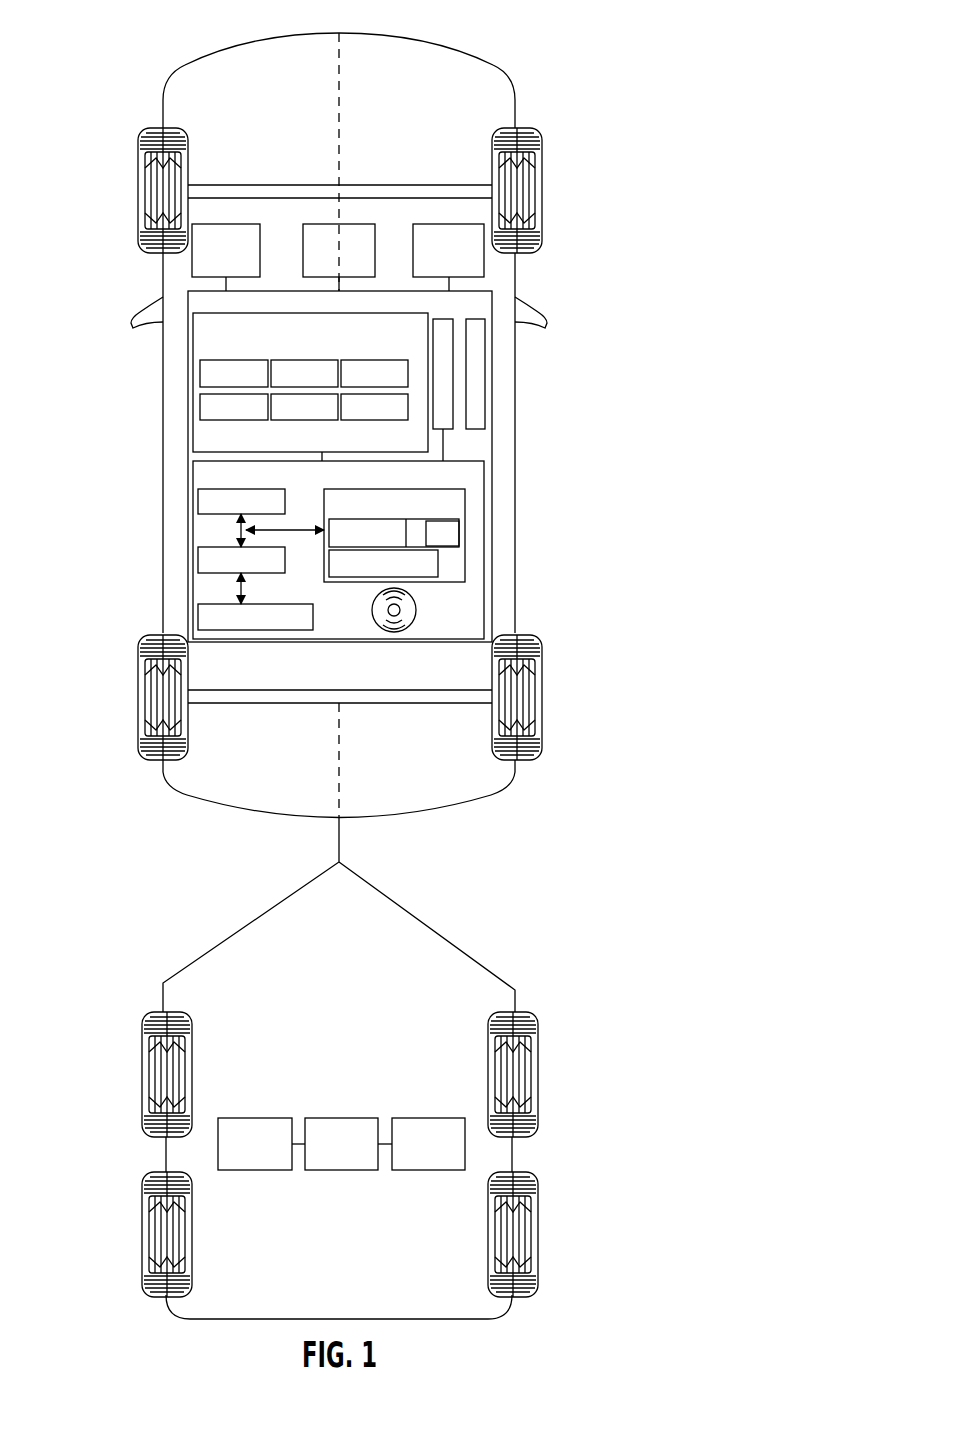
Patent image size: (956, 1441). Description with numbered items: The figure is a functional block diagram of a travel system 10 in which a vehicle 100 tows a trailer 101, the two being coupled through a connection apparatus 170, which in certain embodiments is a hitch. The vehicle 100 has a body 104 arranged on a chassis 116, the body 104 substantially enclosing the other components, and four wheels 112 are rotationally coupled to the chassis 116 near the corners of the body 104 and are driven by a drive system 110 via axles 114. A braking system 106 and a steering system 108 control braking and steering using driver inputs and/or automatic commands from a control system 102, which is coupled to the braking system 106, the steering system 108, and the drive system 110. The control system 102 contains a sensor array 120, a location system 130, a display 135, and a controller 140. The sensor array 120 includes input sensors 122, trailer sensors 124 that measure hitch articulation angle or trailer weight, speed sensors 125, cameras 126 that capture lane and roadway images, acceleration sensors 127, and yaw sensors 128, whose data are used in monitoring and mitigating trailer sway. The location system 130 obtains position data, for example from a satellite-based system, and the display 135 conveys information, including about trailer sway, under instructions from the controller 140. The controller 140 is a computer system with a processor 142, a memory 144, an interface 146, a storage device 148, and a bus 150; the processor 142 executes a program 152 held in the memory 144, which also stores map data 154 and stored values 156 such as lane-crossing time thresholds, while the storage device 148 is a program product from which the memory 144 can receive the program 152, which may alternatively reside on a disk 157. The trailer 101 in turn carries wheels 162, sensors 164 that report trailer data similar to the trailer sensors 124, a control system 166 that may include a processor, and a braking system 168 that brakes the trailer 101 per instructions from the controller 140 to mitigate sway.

The travel system 10 is at (95, 70).
The vehicle 100 is at (512, 20).
The trailer 101 is at (443, 924).
The control system 102 is at (492, 300).
The body 104 is at (165, 360).
The braking system 106 is at (250, 224).
The steering system 108 is at (328, 224).
The drive system 110 is at (425, 224).
The wheels 112 is at (138, 178).
The axles 114 is at (422, 190).
The chassis 116 is at (344, 72).
The sensor array 120 is at (193, 437).
The input sensors 122 is at (213, 360).
The trailer sensors 124 is at (200, 408).
The speed sensors 125 is at (280, 420).
The cameras 126 is at (310, 360).
The acceleration sensors 127 is at (368, 360).
The yaw sensors 128 is at (365, 420).
The location system 130 is at (437, 319).
The display 135 is at (487, 378).
The controller 140 is at (193, 470).
The processor 142 is at (198, 502).
The memory 144 is at (465, 498).
The interface 146 is at (198, 556).
The storage device 148 is at (198, 617).
The bus 150 is at (241, 530).
The program 152 is at (412, 519).
The map data 154 is at (459, 533).
The stored values 156 is at (328, 562).
The disk 157 is at (416, 612).
The wheels 162 is at (142, 1075).
The sensors 164 is at (255, 1118).
The control system 166 is at (338, 1118).
The braking system 168 is at (418, 1118).
The connection apparatus 170 is at (318, 852).